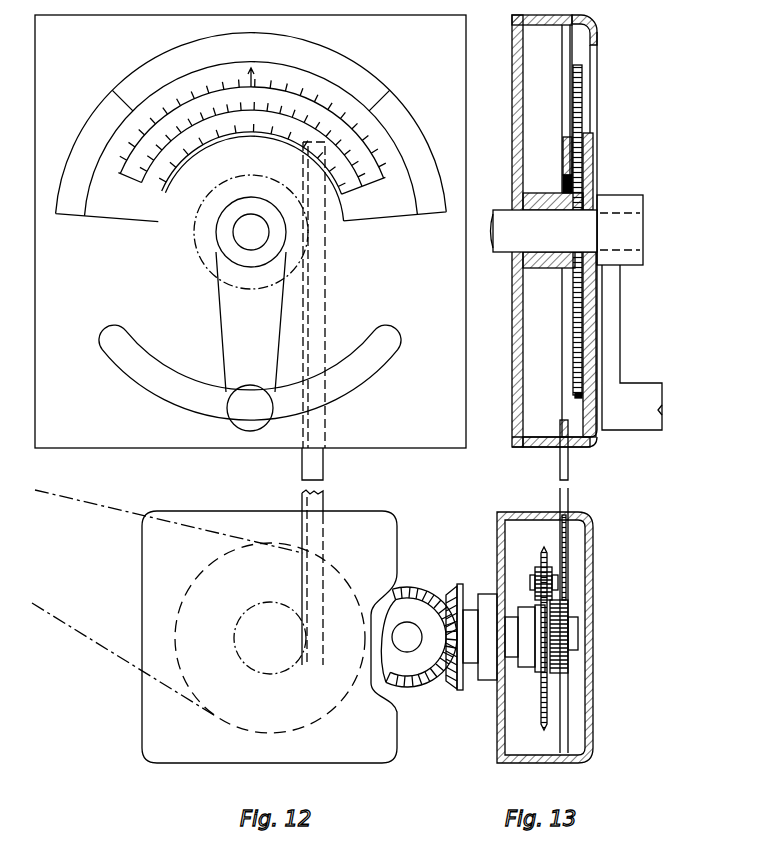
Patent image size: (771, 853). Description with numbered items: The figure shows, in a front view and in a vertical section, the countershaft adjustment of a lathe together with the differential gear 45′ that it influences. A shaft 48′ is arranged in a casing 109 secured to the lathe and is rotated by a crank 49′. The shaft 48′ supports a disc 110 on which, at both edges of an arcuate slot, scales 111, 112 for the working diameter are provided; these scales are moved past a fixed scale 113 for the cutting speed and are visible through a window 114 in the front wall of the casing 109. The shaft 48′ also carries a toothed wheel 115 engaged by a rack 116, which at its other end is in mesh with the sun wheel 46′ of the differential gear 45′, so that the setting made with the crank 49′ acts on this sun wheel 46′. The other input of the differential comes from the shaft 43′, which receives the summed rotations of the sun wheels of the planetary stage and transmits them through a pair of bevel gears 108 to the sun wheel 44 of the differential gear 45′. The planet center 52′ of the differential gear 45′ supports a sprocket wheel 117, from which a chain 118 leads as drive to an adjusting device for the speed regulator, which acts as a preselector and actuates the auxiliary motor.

In FIG. 12, the casing 109 is at (457, 77).
In FIG. 13, the casing 109 is at (597, 30).
In FIG. 12, the disc 110 is at (402, 190).
In FIG. 13, the disc 110 is at (572, 125).
In FIG. 12, the scale for the working diameter 111 is at (120, 137).
In FIG. 12, the scale for the working diameter 112 is at (165, 173).
In FIG. 12, the fixed scale for the cutting speed 113 is at (395, 152).
In FIG. 13, the window 114 is at (598, 42).
In FIG. 12, the toothed wheel 115 is at (207, 258).
In FIG. 13, the toothed wheel 115 is at (573, 182).
In FIG. 12, the rack 116 is at (308, 323).
In FIG. 13, the rack 116 is at (568, 467).
In FIG. 12, the sprocket wheel 117 is at (310, 720).
In FIG. 13, the sprocket wheel 117 is at (542, 565).
In FIG. 12, the chain 118 is at (112, 655).
In FIG. 12, the shaft 43′ is at (407, 645).
In FIG. 13, the sun wheel 44 is at (540, 665).
In FIG. 12, the differential gear 45′ is at (393, 538).
In FIG. 13, the differential gear 45′ is at (590, 553).
In FIG. 13, the sun wheel 46′ is at (567, 665).
In FIG. 13, the shaft 48′ is at (505, 238).
In FIG. 12, the crank 49′ is at (267, 410).
In FIG. 13, the crank 49′ is at (609, 375).
In FIG. 13, the planet center 52′ is at (542, 607).
In FIG. 12, the pair of bevel gears 108 is at (425, 598).